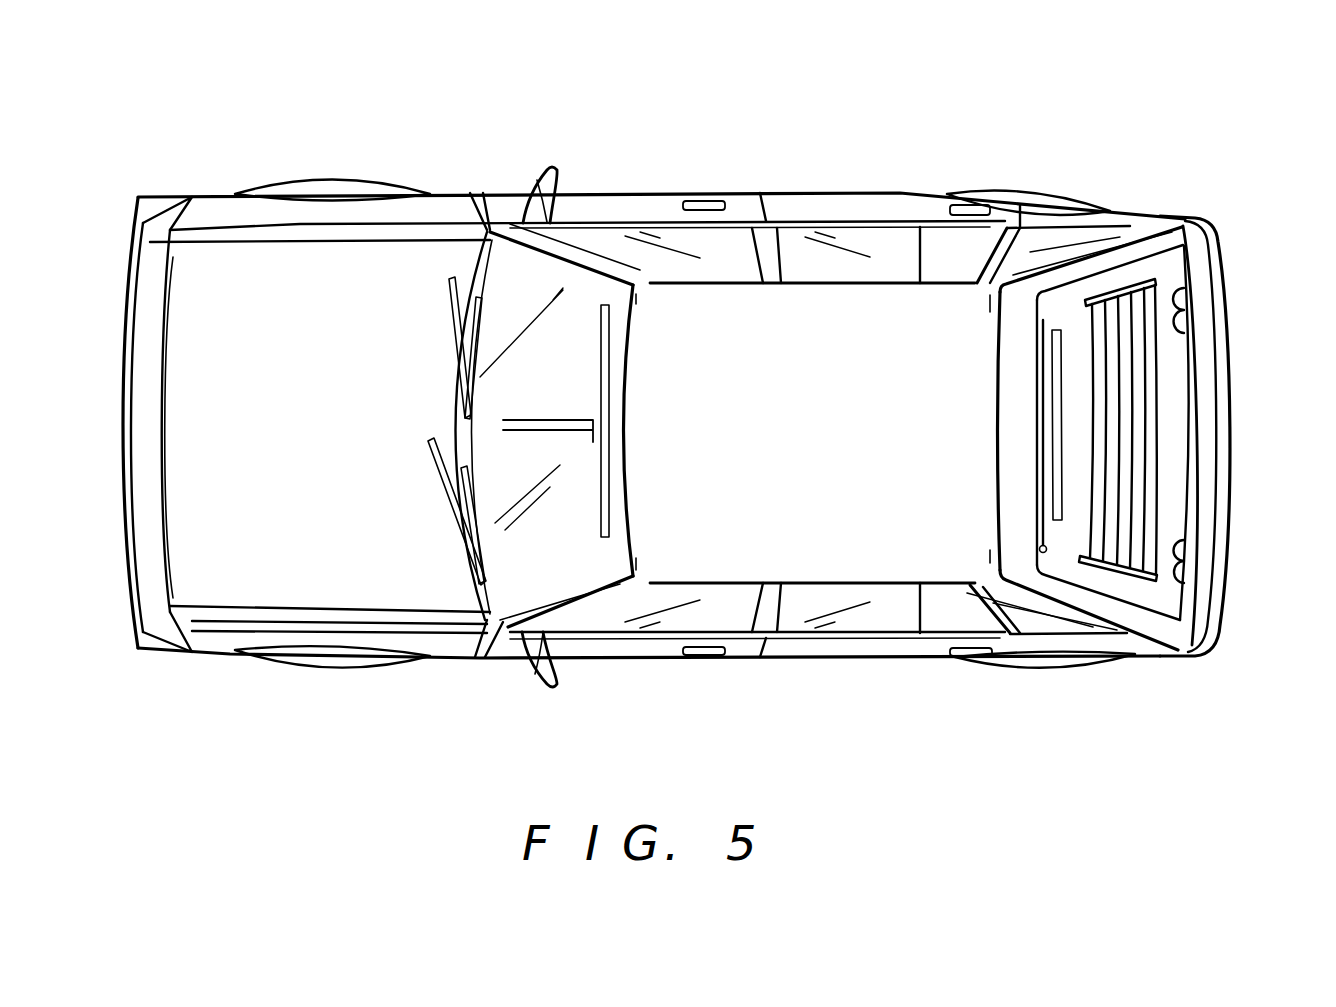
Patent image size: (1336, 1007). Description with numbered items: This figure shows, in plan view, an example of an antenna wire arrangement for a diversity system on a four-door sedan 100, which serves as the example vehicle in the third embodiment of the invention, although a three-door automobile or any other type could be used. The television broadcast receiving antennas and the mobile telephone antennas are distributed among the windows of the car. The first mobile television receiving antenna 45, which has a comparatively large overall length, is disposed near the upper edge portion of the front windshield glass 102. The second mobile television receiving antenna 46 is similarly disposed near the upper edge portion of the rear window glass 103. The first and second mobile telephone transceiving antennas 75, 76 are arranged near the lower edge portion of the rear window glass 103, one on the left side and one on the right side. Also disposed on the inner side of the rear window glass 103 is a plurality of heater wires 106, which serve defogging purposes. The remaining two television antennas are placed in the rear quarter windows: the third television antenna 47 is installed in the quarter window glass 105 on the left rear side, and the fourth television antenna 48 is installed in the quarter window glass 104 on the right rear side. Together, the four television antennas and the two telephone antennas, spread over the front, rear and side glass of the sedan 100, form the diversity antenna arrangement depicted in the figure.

The four-door sedan 100 is at (438, 181).
The front windshield glass 102 is at (513, 595).
The rear window glass 103 is at (1183, 452).
The quarter window glass 104 is at (1110, 232).
The quarter window glass 105 is at (1097, 632).
The heater wires 106 is at (1160, 378).
The mobile television receiving antenna #1 45 is at (600, 517).
The mobile television receiving antenna #2 46 is at (1040, 547).
The television antenna #3 47 is at (1040, 630).
The television antenna #4 48 is at (1048, 232).
The mobile telephone transceiving antenna #1 75 is at (1185, 302).
The mobile telephone transceiving antenna #2 76 is at (1185, 572).